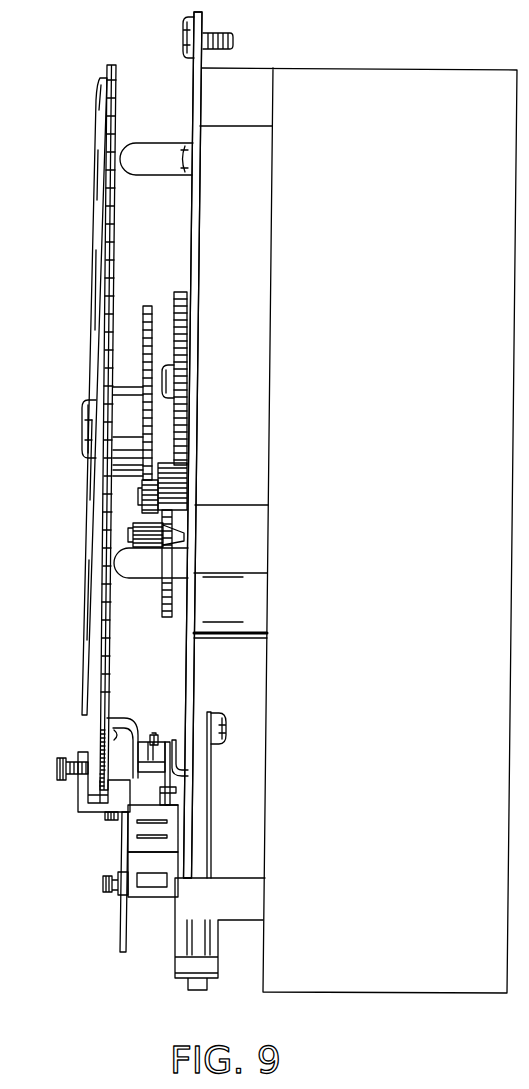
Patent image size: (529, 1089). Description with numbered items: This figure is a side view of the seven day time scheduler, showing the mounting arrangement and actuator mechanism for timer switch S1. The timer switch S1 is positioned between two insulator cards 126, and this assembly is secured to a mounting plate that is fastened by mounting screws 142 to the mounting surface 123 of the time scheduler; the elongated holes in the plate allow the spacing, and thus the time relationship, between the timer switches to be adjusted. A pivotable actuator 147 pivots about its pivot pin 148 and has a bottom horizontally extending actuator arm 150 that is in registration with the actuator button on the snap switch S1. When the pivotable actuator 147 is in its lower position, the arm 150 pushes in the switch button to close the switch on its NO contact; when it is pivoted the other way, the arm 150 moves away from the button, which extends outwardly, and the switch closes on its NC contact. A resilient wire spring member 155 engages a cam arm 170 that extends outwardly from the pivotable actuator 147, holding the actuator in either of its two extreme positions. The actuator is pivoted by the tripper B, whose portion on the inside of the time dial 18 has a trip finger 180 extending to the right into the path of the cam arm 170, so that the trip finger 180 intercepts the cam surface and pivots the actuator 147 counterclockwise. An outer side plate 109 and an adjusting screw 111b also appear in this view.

The outer side plate 109 is at (84, 623).
The time dial 18 is at (97, 726).
The mounting surface 123 is at (187, 642).
The cam arm 170 is at (136, 752).
The trip finger 180 is at (137, 742).
The resilient wire spring member 155 is at (153, 734).
The pivotable actuator 147 is at (193, 768).
The pivot pin 148 is at (175, 753).
The actuator arm 150 is at (168, 790).
The adjusting screw 111b is at (55, 768).
The tripper B is at (78, 808).
The mounting screws 142 is at (104, 818).
The timer switch S1 is at (142, 848).
The insulator cards 126 is at (120, 948).